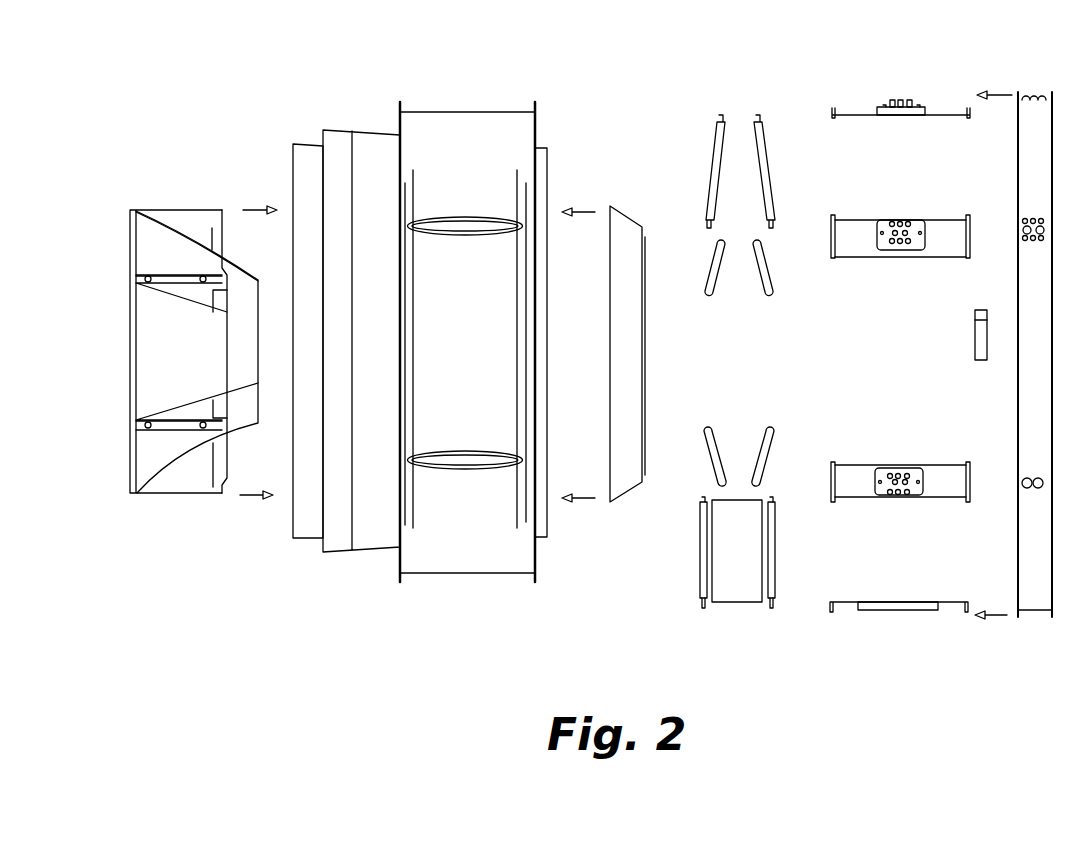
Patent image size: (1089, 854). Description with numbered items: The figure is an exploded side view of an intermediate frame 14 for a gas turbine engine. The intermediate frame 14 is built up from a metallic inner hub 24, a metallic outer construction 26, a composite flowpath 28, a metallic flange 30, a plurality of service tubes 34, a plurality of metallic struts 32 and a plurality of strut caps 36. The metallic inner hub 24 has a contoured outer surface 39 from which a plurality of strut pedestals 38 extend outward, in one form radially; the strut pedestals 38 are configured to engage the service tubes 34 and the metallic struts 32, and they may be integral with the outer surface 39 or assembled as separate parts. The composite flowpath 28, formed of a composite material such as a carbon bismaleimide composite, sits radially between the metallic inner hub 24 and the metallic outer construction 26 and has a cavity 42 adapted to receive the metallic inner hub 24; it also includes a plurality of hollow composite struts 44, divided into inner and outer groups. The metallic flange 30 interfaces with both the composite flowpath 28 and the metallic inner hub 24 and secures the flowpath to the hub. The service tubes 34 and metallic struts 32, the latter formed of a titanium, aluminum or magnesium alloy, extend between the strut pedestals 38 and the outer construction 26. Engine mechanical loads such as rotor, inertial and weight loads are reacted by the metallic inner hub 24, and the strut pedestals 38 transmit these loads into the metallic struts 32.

The intermediate frame 14 is at (255, 68).
The metallic inner hub 24 is at (130, 230).
The metallic outer construction 26 is at (1052, 128).
The composite flowpath 28 is at (338, 130).
The metallic flange 30 is at (622, 207).
The metallic struts 32 is at (767, 143).
The service tubes 34 is at (733, 603).
The strut caps 36 is at (922, 105).
The strut pedestals 38 is at (160, 300).
The contoured outer surface 39 is at (205, 267).
The cavity 42 is at (262, 163).
The hollow composite struts 44 is at (487, 217).